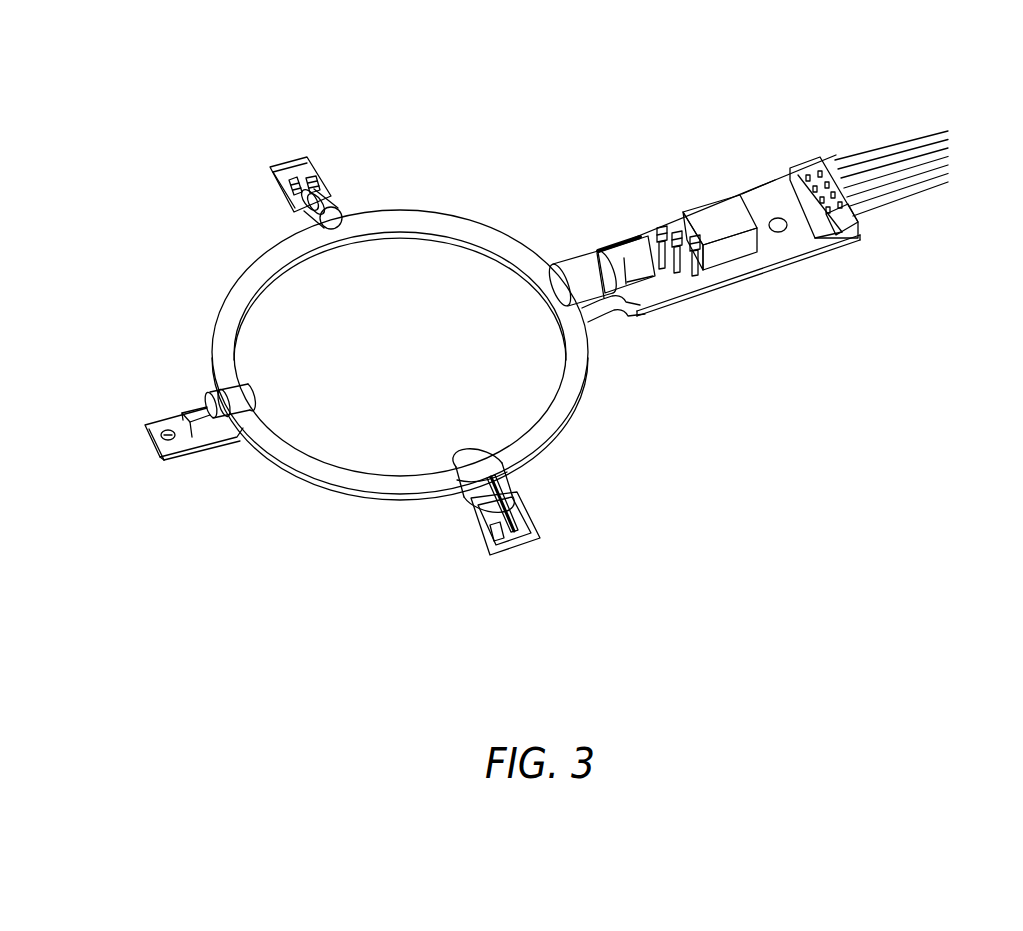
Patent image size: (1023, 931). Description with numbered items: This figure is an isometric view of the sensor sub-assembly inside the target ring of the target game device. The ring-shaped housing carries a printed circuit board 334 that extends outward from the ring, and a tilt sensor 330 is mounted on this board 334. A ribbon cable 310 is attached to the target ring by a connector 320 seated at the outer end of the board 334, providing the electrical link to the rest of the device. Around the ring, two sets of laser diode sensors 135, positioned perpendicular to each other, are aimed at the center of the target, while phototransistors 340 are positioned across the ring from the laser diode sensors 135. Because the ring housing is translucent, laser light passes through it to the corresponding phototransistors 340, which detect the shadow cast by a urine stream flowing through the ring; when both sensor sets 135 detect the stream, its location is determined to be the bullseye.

The phototransistors 340 is at (288, 220).
The laser diode sensors 135 is at (598, 313).
The tilt sensor 330 is at (731, 271).
The printed circuit board 334 is at (752, 188).
The connector 320 is at (834, 141).
The ribbon cable 310 is at (915, 217).